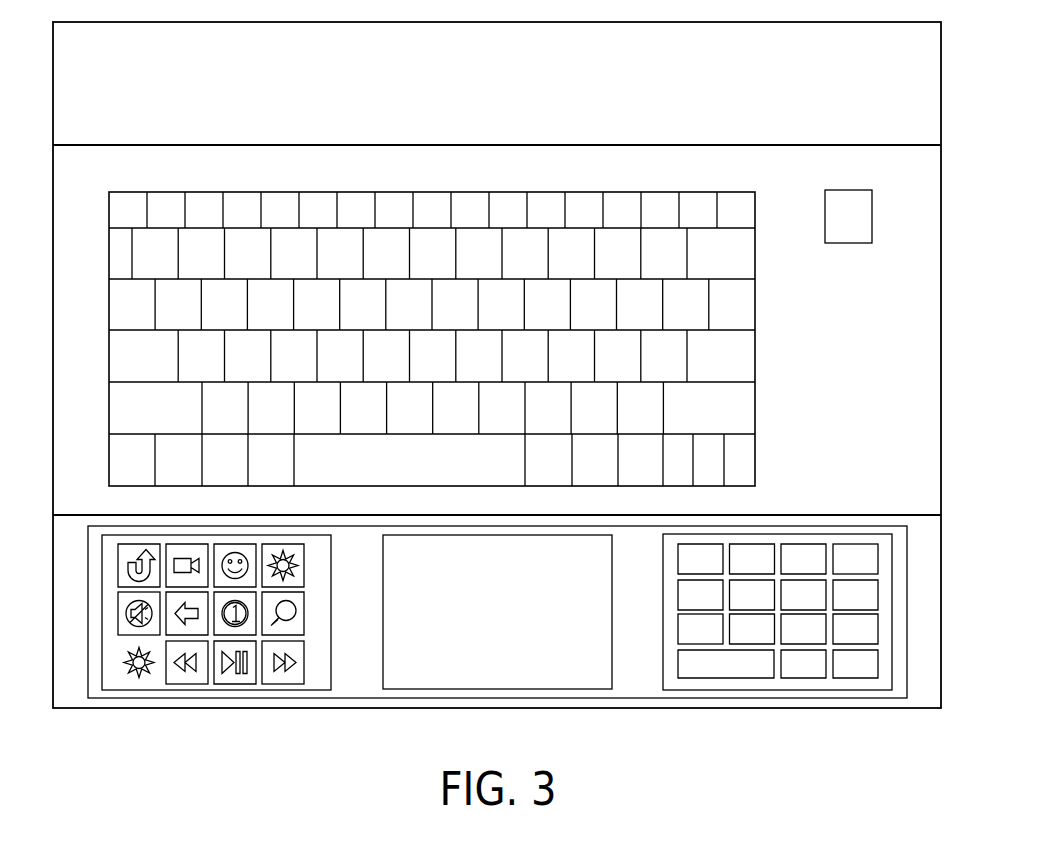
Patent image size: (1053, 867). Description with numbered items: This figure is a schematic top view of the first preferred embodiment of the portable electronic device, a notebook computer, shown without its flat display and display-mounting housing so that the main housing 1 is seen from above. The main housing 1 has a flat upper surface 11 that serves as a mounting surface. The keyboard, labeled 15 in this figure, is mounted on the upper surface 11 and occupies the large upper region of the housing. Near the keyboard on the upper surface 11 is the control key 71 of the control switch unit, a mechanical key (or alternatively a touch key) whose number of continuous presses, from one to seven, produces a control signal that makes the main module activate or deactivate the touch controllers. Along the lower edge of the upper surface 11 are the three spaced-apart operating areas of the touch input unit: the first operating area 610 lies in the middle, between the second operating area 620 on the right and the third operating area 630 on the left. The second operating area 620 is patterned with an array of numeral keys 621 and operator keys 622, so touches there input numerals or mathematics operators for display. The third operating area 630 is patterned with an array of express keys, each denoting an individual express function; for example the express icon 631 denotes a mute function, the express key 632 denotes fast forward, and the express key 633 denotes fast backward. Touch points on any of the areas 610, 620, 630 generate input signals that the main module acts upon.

The main housing 1 is at (941, 88).
The upper surface 11 is at (912, 221).
The keyboard 15 is at (660, 191).
The control key 71 is at (872, 210).
The first operating area 610 is at (612, 630).
The second operating area 620 is at (834, 640).
The numeral keys 621 is at (678, 627).
The operator keys 622 is at (878, 557).
The third operating area 630 is at (220, 649).
The express icon 631 is at (118, 612).
The express key 632 is at (288, 676).
The express key 633 is at (183, 680).